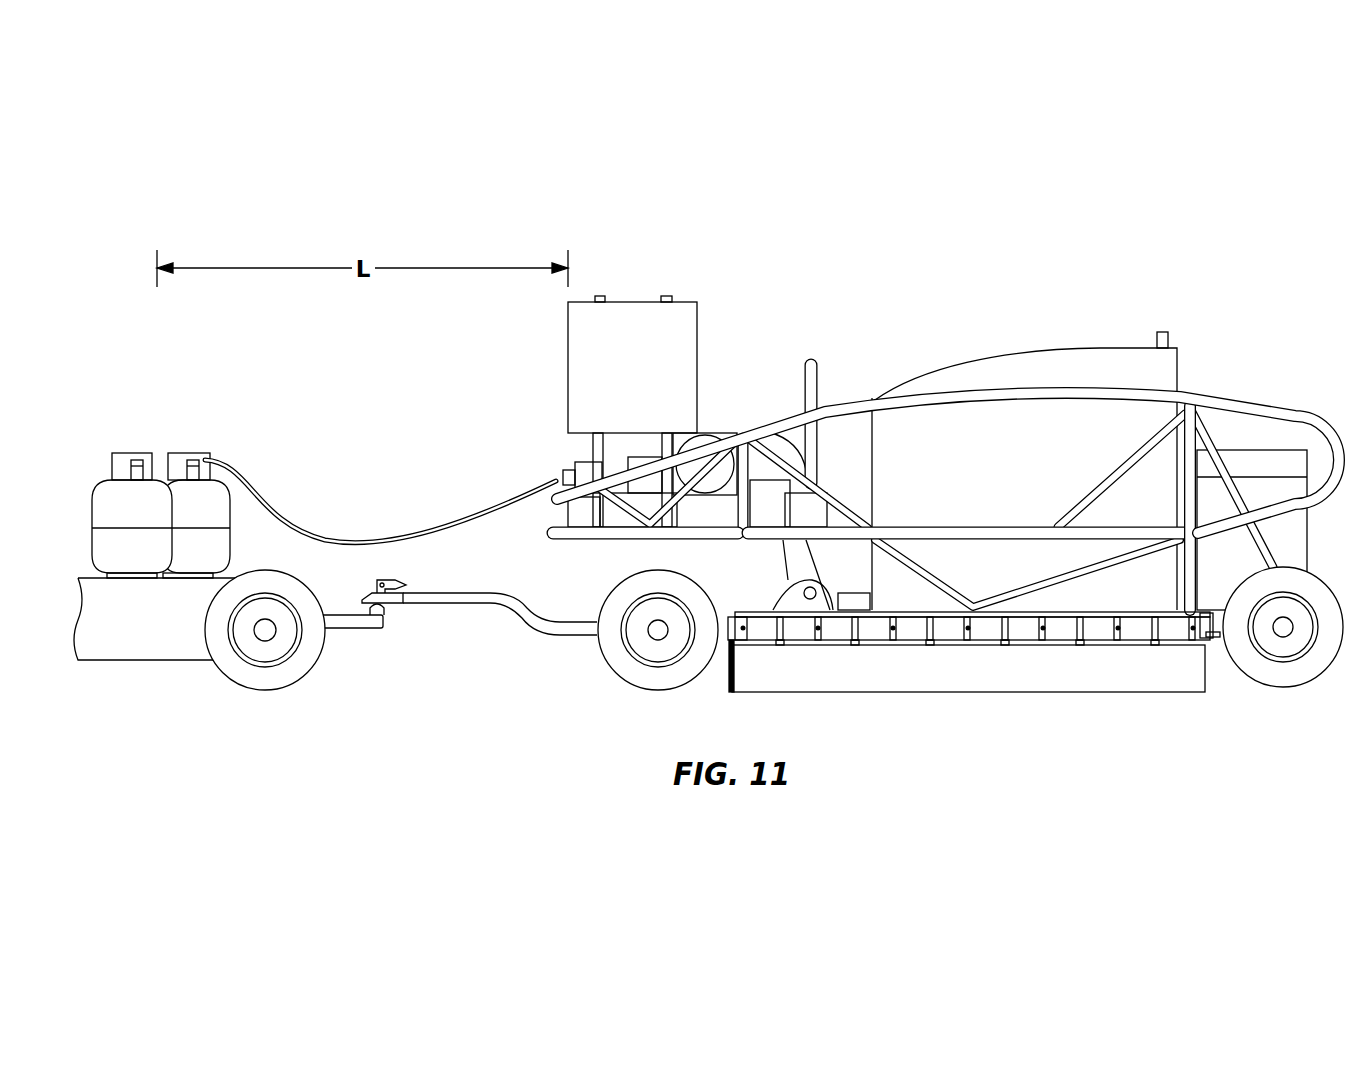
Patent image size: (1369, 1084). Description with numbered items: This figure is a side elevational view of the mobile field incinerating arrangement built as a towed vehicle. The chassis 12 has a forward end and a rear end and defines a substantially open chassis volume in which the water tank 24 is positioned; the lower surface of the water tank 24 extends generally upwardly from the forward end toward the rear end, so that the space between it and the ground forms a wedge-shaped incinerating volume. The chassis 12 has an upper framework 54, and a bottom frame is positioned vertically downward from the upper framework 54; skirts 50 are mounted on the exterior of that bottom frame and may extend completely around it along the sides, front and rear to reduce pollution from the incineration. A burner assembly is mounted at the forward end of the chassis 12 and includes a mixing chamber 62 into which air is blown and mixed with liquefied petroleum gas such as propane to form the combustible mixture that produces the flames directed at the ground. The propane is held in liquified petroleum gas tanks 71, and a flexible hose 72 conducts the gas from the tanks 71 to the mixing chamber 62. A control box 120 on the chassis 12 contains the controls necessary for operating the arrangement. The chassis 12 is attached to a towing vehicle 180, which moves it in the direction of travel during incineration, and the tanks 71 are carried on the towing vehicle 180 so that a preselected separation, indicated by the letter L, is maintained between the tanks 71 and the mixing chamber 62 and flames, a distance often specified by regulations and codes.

The chassis 12 is at (949, 494).
The water tank 24 is at (1050, 346).
The skirts 50 is at (728, 680).
The upper framework 54 is at (1305, 408).
The mixing chamber 62 is at (1040, 692).
The liquified petroleum gas tanks 71 is at (162, 436).
The flexible hose 72 is at (280, 512).
The control box 120 is at (631, 298).
The towing vehicle 180 is at (270, 582).